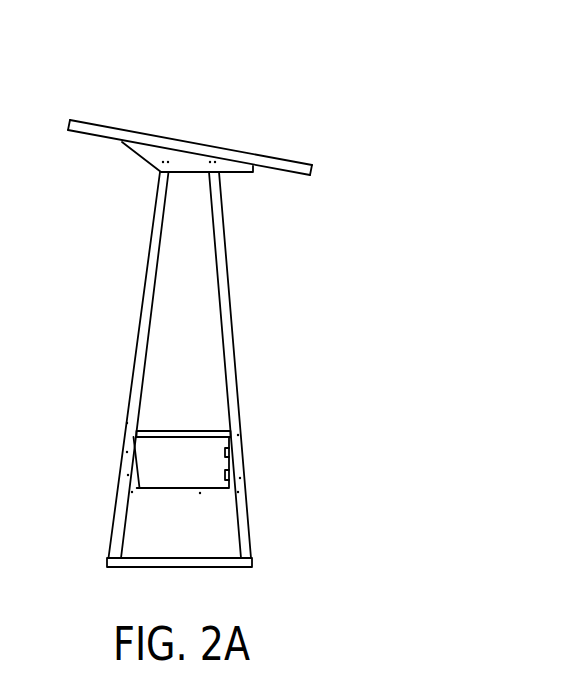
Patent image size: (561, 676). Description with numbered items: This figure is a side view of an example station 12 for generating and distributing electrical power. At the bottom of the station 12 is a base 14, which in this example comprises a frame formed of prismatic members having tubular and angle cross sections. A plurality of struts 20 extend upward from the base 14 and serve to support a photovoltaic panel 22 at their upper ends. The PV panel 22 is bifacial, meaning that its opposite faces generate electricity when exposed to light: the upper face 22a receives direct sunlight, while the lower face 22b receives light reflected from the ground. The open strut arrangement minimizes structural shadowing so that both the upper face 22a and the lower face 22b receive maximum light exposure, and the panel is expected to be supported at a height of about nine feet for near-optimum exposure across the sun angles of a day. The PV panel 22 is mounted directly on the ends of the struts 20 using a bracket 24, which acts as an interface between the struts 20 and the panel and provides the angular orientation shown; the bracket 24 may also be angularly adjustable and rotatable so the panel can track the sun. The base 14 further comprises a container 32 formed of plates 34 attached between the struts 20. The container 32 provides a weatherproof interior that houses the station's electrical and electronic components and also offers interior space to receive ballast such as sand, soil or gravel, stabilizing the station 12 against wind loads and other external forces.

The station 12 is at (445, 184).
The photovoltaic panel 22 is at (97, 120).
The upper face 22a is at (268, 157).
The lower face 22b is at (280, 175).
The bracket 24 is at (140, 158).
The strut 20 is at (143, 318).
The container 32 is at (132, 515).
The plate 34 is at (152, 535).
The base 14 is at (245, 562).